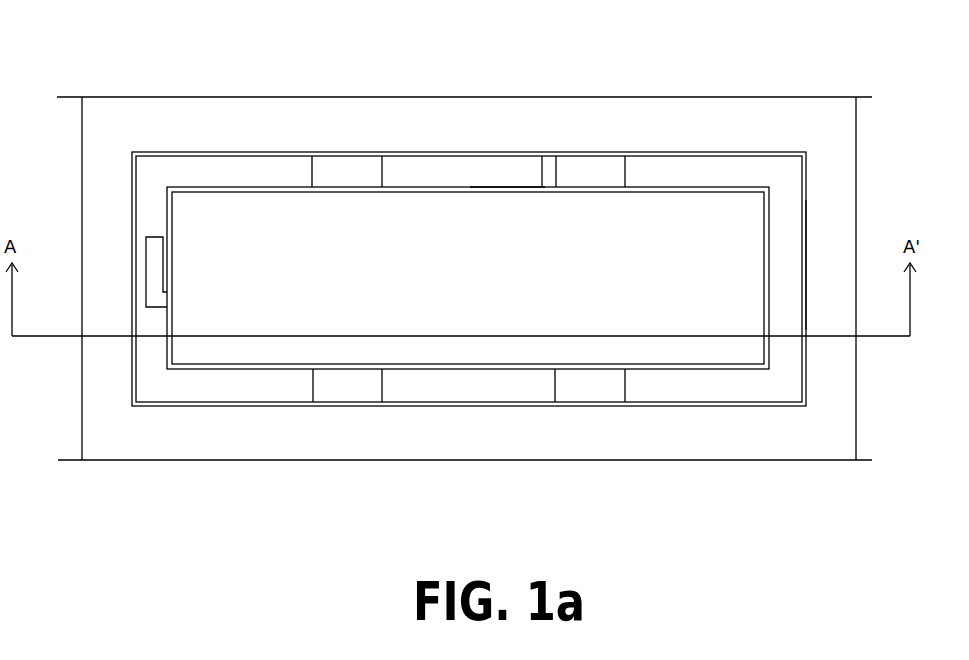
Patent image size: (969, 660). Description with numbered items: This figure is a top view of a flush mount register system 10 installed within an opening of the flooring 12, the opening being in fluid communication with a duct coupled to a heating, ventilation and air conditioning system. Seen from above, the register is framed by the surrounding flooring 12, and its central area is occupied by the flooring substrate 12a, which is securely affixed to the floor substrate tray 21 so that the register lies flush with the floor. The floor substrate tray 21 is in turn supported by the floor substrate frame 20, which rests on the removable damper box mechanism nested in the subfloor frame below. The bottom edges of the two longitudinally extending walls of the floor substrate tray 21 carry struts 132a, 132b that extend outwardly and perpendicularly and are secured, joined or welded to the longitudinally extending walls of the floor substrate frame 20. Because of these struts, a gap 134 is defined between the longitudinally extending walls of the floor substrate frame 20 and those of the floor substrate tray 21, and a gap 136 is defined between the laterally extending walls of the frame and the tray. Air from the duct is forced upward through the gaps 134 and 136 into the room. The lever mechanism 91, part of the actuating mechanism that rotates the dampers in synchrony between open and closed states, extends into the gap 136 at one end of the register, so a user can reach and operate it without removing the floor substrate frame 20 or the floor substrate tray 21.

The flush mount register system 10 is at (440, 440).
The flooring 12 is at (828, 398).
The flooring substrate 12a is at (469, 238).
The floor substrate frame 20 is at (410, 152).
The floor substrate tray 21 is at (508, 188).
The lever mechanism 91 is at (155, 267).
The strut 132a is at (343, 387).
The strut 132b is at (333, 173).
The gap 134 is at (542, 188).
The gap 136 is at (807, 265).